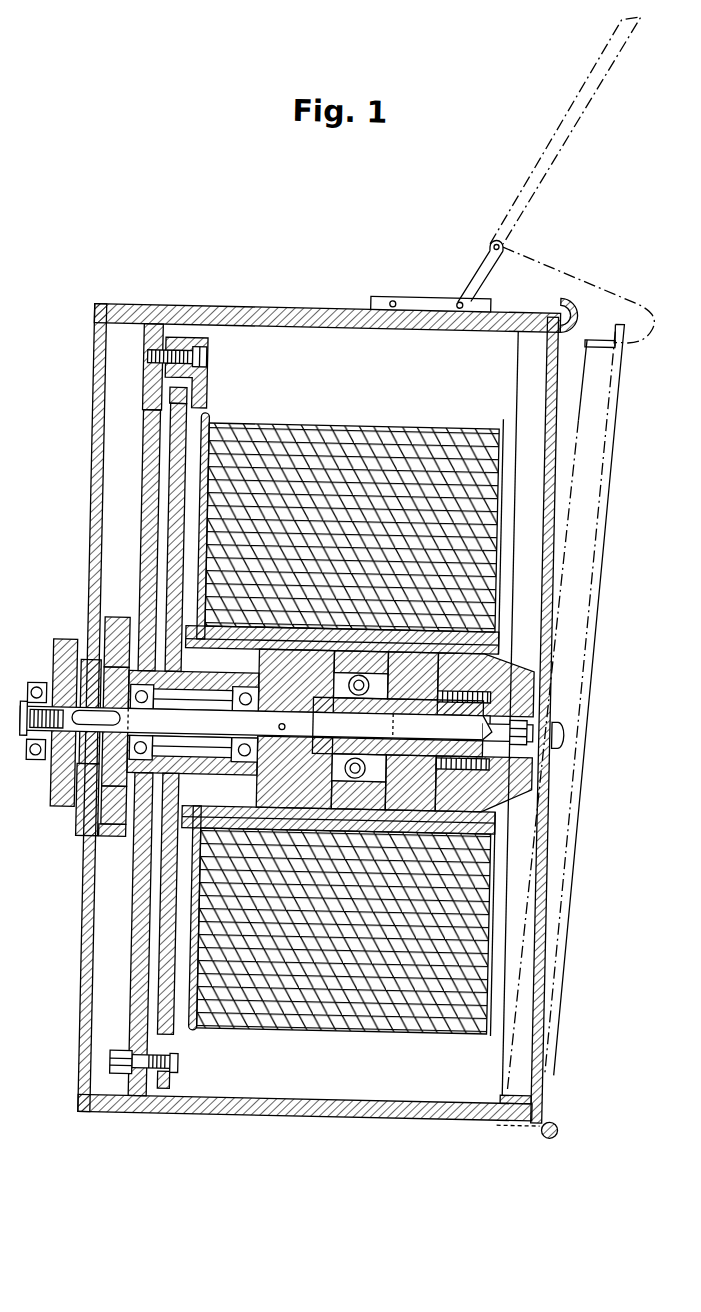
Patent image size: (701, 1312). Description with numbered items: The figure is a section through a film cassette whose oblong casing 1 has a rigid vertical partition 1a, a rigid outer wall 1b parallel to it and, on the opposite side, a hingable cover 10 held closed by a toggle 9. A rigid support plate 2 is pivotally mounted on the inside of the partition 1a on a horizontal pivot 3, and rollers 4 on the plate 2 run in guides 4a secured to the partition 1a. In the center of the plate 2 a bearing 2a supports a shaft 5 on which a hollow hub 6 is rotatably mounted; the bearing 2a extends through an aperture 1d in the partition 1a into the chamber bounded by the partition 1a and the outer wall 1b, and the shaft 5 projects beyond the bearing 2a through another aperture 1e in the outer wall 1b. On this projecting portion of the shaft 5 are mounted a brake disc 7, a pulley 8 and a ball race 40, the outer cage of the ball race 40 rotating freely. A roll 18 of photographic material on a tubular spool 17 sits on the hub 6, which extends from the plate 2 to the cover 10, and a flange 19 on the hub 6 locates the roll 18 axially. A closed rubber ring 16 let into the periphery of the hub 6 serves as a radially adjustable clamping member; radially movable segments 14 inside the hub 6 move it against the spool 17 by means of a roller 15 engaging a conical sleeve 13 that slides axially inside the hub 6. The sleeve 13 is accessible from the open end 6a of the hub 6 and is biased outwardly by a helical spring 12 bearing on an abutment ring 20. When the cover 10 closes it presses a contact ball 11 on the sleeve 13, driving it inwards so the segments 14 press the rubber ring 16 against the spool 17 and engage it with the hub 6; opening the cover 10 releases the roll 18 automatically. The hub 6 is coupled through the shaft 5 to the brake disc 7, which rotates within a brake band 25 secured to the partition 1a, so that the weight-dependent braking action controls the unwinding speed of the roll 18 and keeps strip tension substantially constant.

The casing 1 is at (295, 728).
The partition 1a is at (146, 964).
The outer wall 1b is at (84, 940).
The aperture 1d is at (117, 622).
The aperture 1e is at (80, 653).
The support plate 2 is at (182, 1032).
The bearing 2a is at (211, 772).
The pivot 3 is at (187, 1064).
The rollers 4 is at (162, 396).
The guides 4a is at (201, 392).
The shaft 5 is at (62, 723).
The hollow hub 6 is at (243, 638).
The open end 6a is at (531, 758).
The brake disc 7 is at (103, 822).
The pulley 8 is at (53, 786).
The toggle 9 is at (453, 280).
The cover 10 is at (551, 874).
The contact ball 11 is at (552, 723).
The helical spring 12 is at (446, 645).
The conical sleeve 13 is at (527, 702).
The segments 14 is at (333, 782).
The roller 15 is at (295, 726).
The rubber ring 16 is at (364, 645).
The tubular spool 17 is at (500, 624).
The roll 18 is at (408, 450).
The flange 19 is at (193, 518).
The abutment ring 20 is at (413, 788).
The brake band 25 is at (117, 840).
The ball race 40 is at (33, 690).